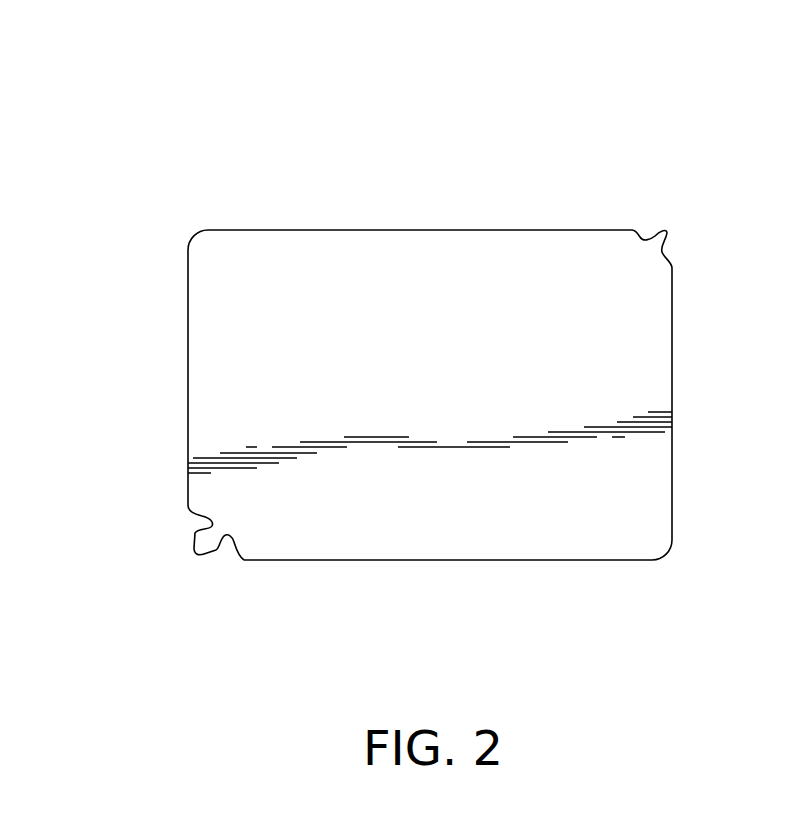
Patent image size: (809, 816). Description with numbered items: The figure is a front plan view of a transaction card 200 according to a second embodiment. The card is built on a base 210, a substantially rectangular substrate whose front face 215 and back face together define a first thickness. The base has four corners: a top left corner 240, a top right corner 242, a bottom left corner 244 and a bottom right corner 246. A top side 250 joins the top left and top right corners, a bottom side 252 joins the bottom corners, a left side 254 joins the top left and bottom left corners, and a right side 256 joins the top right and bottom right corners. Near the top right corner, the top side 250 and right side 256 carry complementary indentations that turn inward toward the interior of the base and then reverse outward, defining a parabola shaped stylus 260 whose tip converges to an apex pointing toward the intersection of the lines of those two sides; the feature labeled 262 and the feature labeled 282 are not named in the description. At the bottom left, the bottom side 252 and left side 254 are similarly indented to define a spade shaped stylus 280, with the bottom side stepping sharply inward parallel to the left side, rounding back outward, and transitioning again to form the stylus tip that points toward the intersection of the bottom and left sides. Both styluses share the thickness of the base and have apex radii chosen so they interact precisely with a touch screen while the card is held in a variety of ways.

The transaction card 200 is at (508, 84).
The base 210 is at (516, 254).
The front face 215 is at (463, 385).
The top left corner 240 is at (190, 238).
The top right corner 242 is at (667, 232).
The bottom left corner 244 is at (195, 553).
The bottom right corner 246 is at (665, 550).
The top side 250 is at (392, 229).
The bottom side 252 is at (450, 560).
The left side 254 is at (187, 380).
The right side 256 is at (673, 393).
The parabola shaped stylus 260 is at (637, 258).
The notch recess 262 is at (663, 245).
The spade shaped stylus 280 is at (179, 535).
The notch protrusion 282 is at (203, 543).